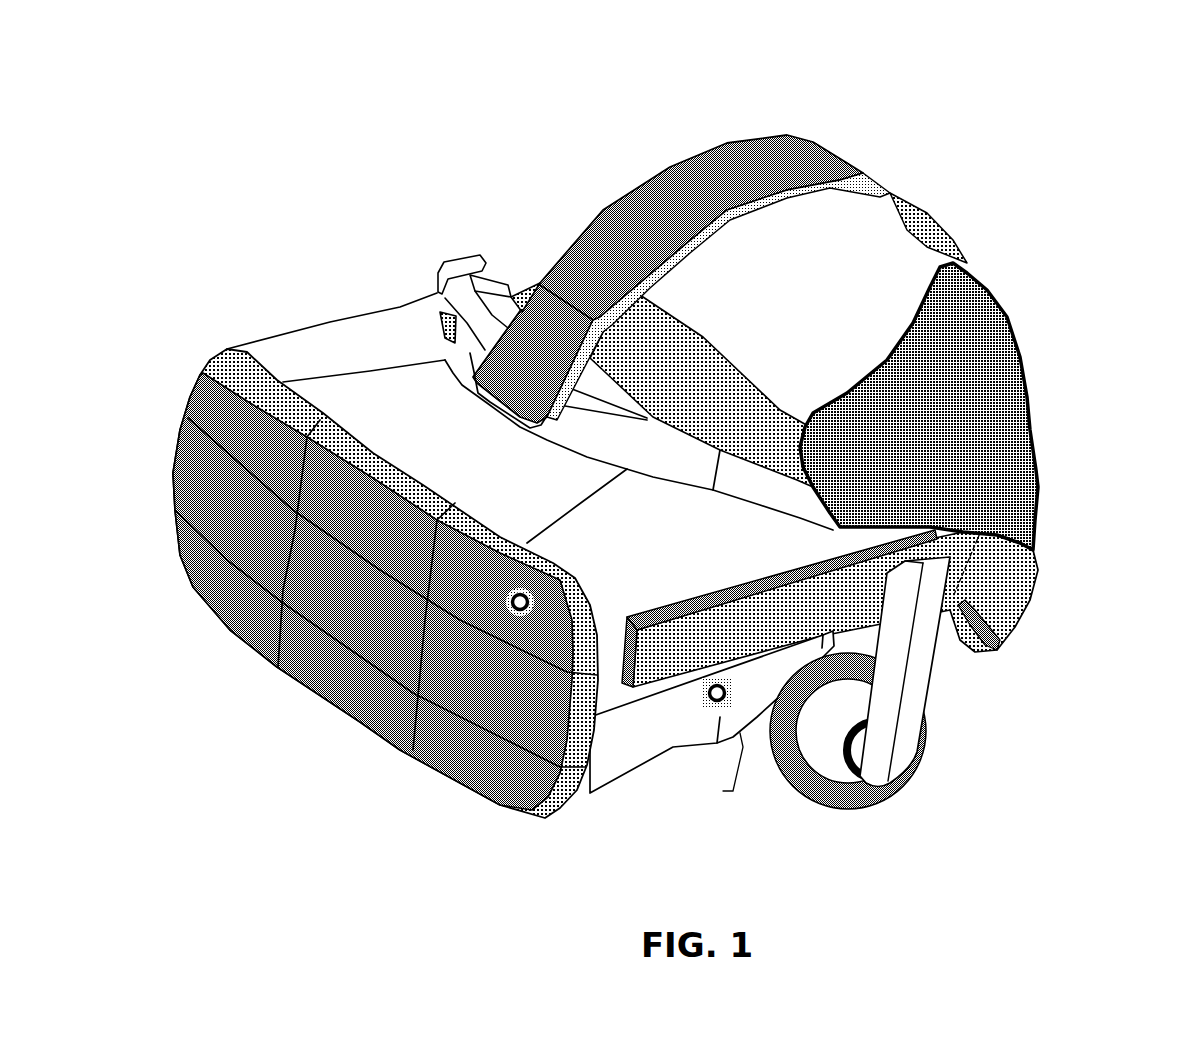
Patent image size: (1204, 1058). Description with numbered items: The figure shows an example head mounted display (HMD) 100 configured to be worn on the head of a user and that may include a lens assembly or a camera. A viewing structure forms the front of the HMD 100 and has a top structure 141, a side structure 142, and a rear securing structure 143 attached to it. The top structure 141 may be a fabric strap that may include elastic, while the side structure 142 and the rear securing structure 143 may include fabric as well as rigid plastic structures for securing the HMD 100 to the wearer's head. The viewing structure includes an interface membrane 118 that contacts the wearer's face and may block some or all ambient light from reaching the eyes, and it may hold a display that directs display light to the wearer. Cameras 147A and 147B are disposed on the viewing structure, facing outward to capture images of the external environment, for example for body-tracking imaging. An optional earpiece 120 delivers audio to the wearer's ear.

The head mounted display (HMD) 100 is at (1164, 66).
The interface membrane 118 is at (508, 292).
The earpiece 120 is at (918, 779).
The top structure 141 is at (830, 150).
The side structure 142 is at (703, 337).
The rear securing structure 143 is at (1018, 357).
The camera 147A is at (530, 595).
The camera 147B is at (705, 697).